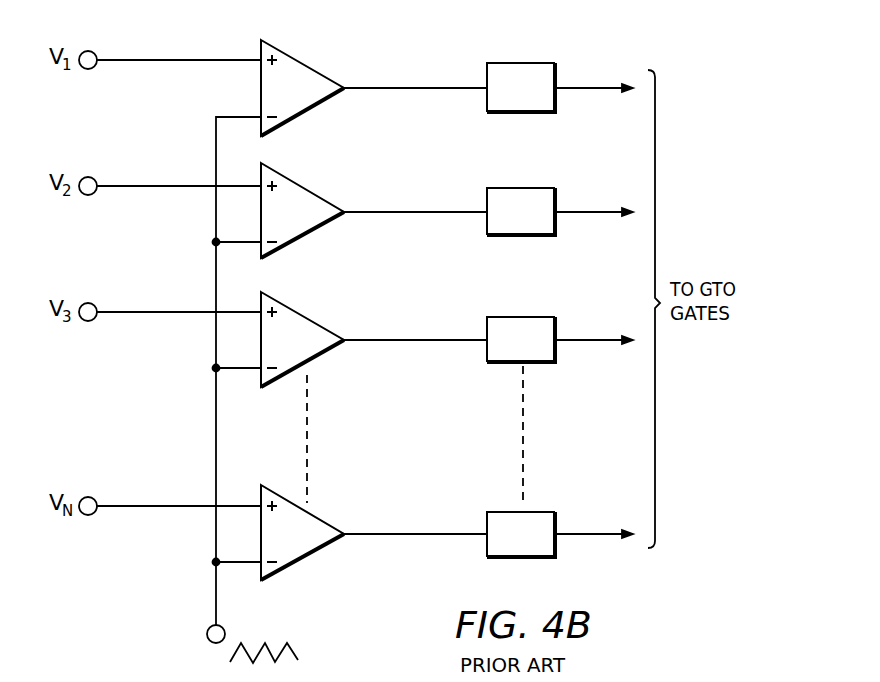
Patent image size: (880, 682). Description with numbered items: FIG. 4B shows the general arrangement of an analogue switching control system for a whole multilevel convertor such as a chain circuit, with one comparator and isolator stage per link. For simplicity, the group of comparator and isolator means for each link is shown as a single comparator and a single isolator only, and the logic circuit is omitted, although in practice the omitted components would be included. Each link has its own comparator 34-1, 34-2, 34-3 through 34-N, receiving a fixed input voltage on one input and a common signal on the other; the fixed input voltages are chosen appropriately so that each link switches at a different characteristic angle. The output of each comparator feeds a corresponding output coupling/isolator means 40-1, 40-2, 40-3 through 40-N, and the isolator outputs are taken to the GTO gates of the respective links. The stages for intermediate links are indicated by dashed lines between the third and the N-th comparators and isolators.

The comparator 34-1 is at (302, 65).
The comparator 34-2 is at (312, 192).
The comparator 34-3 is at (320, 322).
The comparator 34-N is at (328, 517).
The isolator 40-1 is at (545, 63).
The isolator 40-2 is at (539, 195).
The isolator 40-3 is at (548, 322).
The isolator 40-N is at (545, 512).